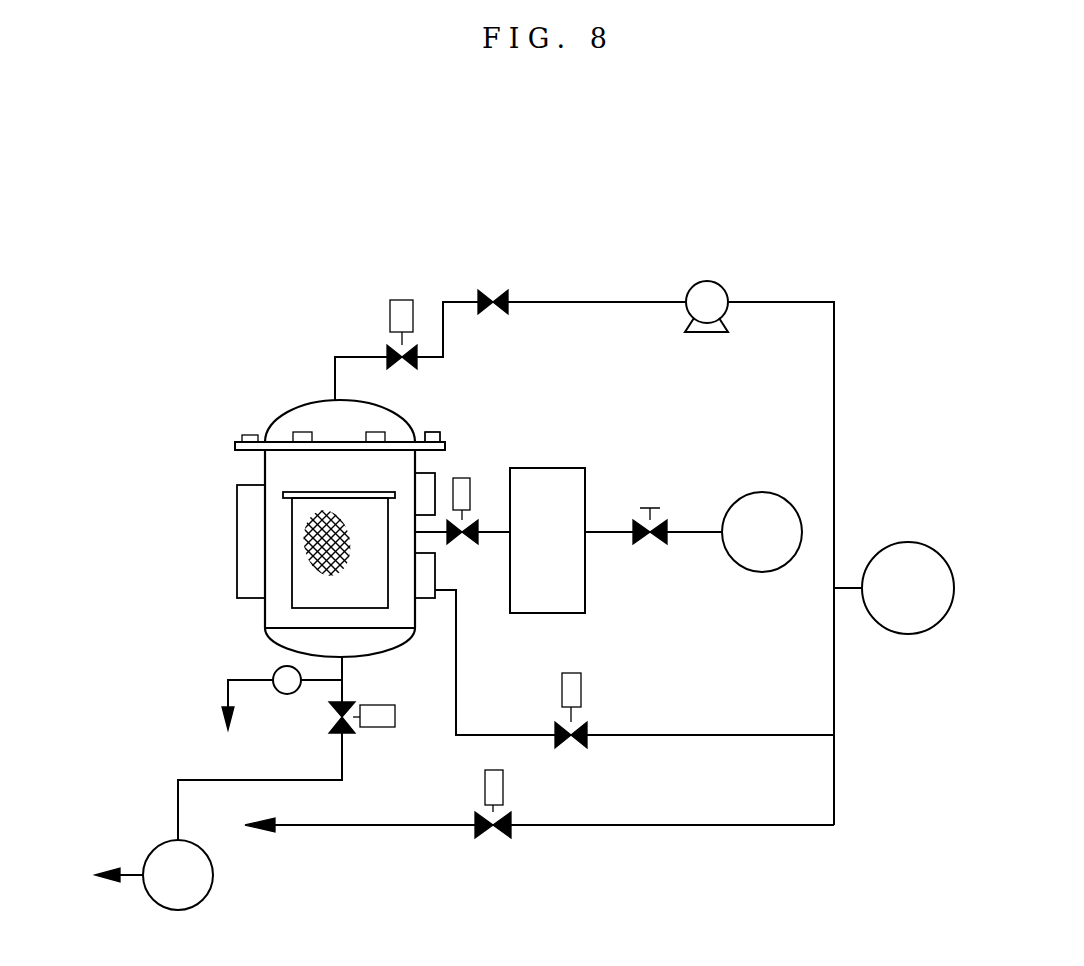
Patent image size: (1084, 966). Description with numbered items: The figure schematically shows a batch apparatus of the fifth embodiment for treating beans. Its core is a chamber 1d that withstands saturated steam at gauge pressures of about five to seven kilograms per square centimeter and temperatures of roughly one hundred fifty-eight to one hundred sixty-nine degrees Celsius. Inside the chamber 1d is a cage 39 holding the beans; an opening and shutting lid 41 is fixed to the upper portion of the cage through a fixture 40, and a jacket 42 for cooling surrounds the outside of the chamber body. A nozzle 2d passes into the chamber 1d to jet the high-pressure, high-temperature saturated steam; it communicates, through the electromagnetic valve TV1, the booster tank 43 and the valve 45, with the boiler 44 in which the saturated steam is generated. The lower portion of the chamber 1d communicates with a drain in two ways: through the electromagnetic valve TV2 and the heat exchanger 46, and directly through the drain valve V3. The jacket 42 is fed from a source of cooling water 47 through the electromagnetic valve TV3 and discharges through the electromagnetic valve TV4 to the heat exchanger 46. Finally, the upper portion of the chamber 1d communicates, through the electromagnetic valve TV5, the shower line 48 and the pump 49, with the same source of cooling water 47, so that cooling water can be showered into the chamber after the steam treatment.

The chamber 1d is at (265, 470).
The nozzle 2d is at (423, 535).
The cage 39 is at (327, 568).
The fixture 40 is at (433, 428).
The opening and shutting lid 41 is at (312, 403).
The jacket 42 is at (237, 522).
The booster tank 43 is at (570, 478).
The boiler 44 is at (762, 492).
The valve 45 is at (652, 545).
The heat exchanger 46 is at (213, 876).
The source of cooling water 47 is at (908, 542).
The shower line 48 is at (595, 302).
The pump 49 is at (707, 281).
The electromagnetic valve TV1 is at (472, 522).
The electromagnetic valve TV2 is at (350, 725).
The electromagnetic valve TV3 is at (577, 745).
The electromagnetic valve TV4 is at (497, 838).
The electromagnetic valve TV5 is at (392, 350).
The drain valve V3 is at (278, 670).